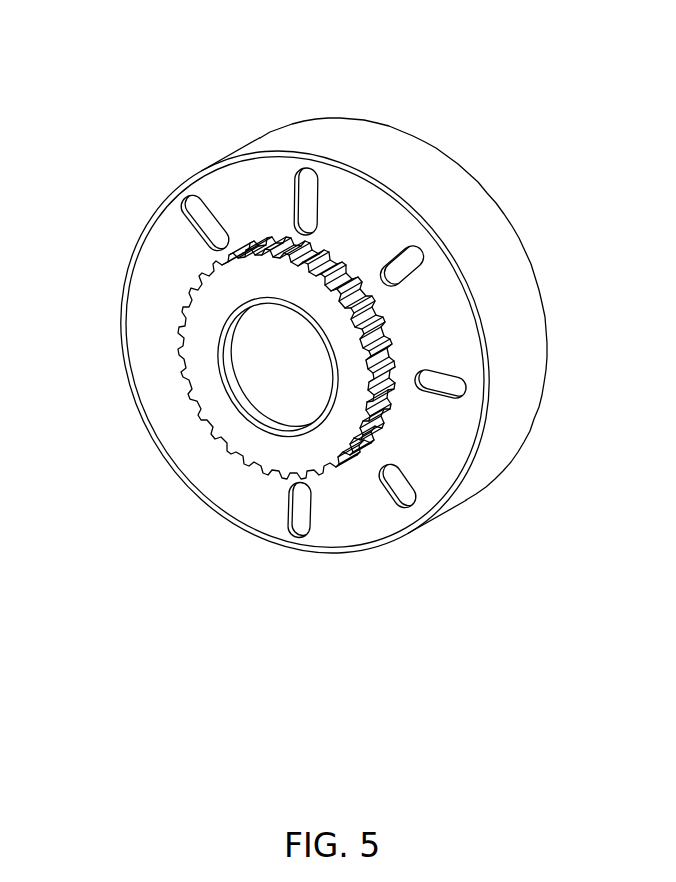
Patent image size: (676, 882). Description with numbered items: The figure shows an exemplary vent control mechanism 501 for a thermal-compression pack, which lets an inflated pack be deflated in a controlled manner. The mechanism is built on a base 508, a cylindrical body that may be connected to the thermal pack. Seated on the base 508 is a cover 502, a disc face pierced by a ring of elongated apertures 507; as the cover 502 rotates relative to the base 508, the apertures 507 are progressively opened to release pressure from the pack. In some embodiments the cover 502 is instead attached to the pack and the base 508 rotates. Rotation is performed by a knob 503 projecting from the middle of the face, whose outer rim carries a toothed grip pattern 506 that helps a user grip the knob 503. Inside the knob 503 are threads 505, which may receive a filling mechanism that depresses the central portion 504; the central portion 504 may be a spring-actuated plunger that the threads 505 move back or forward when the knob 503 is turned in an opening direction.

The vent control mechanism 501 is at (207, 72).
The cover 502 is at (152, 277).
The knob 503 is at (265, 447).
The central portion 504 is at (268, 352).
The threads 505 is at (250, 402).
The grip pattern 506 is at (273, 247).
The apertures 507 is at (298, 519).
The base 508 is at (447, 213).